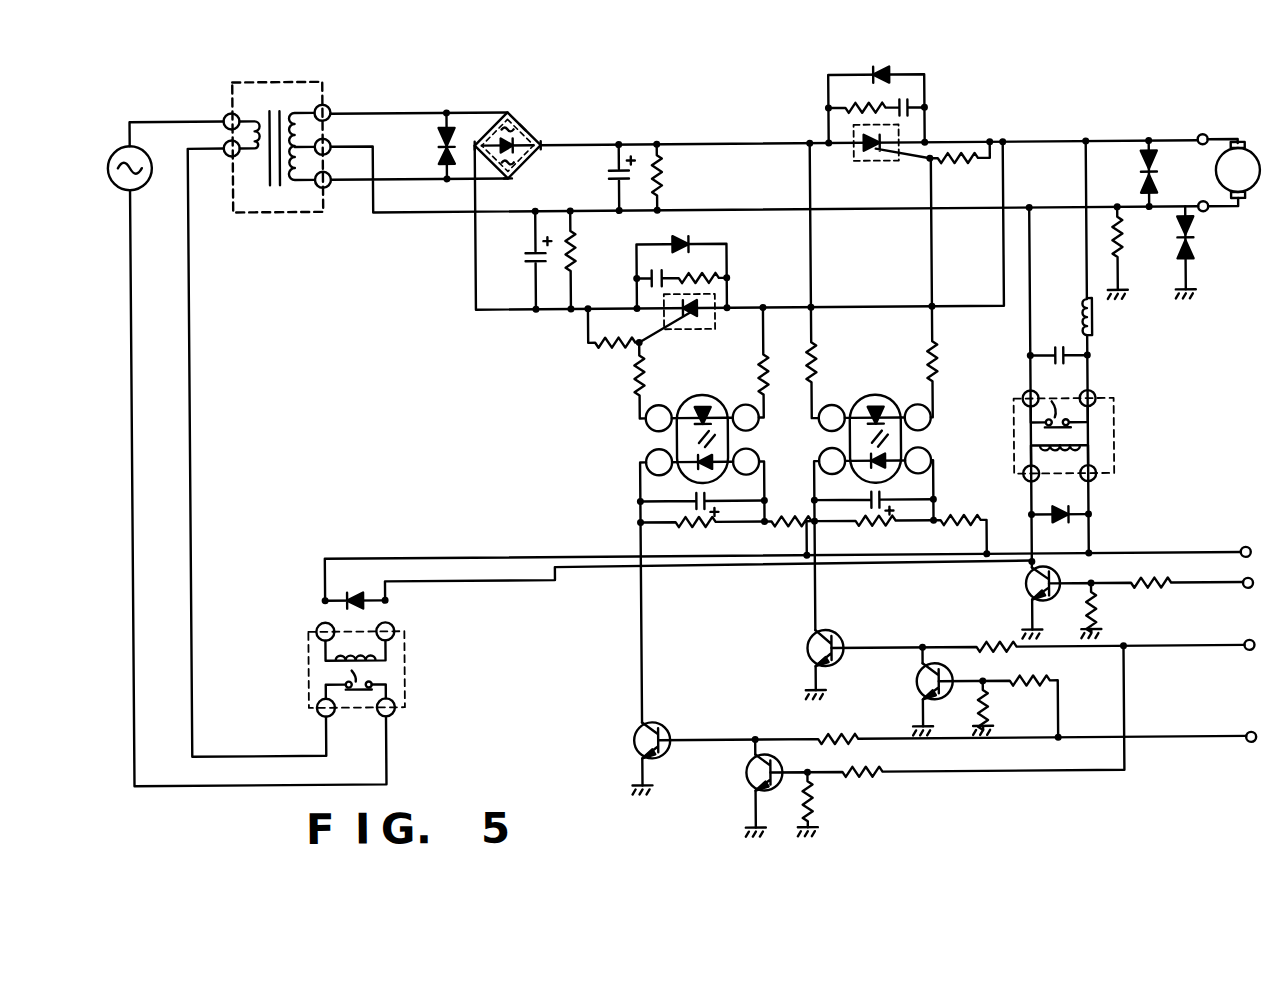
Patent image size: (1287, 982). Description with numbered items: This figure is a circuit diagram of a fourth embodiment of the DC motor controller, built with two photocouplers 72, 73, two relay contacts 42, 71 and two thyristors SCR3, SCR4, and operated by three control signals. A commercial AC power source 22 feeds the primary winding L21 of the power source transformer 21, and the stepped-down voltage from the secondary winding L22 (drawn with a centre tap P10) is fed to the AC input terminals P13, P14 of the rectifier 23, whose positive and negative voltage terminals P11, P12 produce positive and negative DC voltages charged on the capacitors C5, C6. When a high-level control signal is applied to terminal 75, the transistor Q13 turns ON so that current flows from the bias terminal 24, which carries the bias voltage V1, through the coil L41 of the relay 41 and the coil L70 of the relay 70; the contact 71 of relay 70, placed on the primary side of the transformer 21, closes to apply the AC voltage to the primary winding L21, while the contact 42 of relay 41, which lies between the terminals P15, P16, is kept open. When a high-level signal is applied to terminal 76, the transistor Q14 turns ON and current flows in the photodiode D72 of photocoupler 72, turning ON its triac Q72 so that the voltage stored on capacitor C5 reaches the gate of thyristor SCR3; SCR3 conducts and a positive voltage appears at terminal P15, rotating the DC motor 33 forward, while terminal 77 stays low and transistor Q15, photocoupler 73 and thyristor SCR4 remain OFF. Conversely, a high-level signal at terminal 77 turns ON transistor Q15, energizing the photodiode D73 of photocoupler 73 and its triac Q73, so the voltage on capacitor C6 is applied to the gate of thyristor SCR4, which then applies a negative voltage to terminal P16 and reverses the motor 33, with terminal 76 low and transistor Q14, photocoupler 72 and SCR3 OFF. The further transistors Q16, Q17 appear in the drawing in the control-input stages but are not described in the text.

The commercial AC power source 22 is at (148, 157).
The power source transformer 21 is at (292, 212).
The primary winding L21 is at (258, 156).
The secondary winding L22 is at (317, 110).
The center tap terminal P10 is at (333, 143).
The rectifier 23 is at (510, 110).
The negative voltage terminal P12 is at (476, 142).
The AC input terminal P13 is at (520, 121).
The positive voltage terminal P11 is at (545, 144).
The AC input terminal P14 is at (519, 168).
The capacitor C5 is at (624, 167).
The capacitor C6 is at (530, 264).
The thyristor SCR3 is at (900, 143).
The thyristor SCR4 is at (701, 302).
The terminal P15 is at (1206, 138).
The DC motor 33 is at (1216, 178).
The terminal P16 is at (1207, 216).
The triac Q73 is at (708, 383).
The photocoupler 73 is at (712, 430).
The photodiode D73 is at (700, 479).
The triac Q72 is at (882, 383).
The photocoupler 72 is at (886, 429).
The photodiode D72 is at (873, 479).
The contact of relay 42 is at (1058, 400).
The relay 41 is at (1090, 428).
The coil of relay L41 is at (1095, 458).
The bias terminal 24 is at (1245, 551).
The bias voltage V1 is at (1269, 555).
The terminal 75 is at (1247, 592).
The terminal 76 is at (1248, 654).
The terminal 77 is at (1249, 746).
The transistor Q13 is at (1025, 588).
The transistor Q14 is at (806, 650).
The transistor Q15 is at (632, 742).
The transistor Q16 is at (916, 686).
The transistor Q17 is at (744, 777).
The coil of relay L70 is at (391, 653).
The relay 70 is at (387, 669).
The contact of relay 71 is at (396, 693).